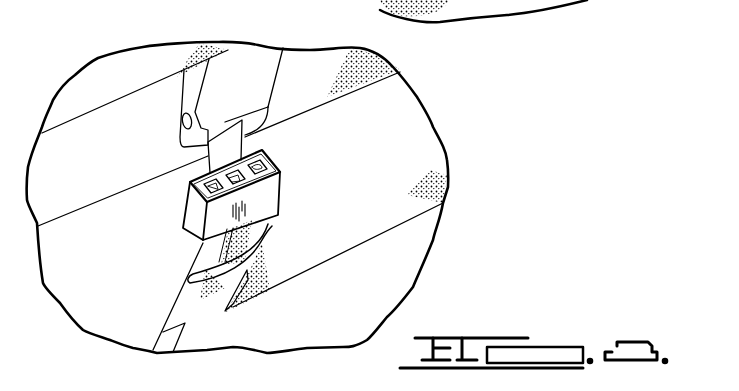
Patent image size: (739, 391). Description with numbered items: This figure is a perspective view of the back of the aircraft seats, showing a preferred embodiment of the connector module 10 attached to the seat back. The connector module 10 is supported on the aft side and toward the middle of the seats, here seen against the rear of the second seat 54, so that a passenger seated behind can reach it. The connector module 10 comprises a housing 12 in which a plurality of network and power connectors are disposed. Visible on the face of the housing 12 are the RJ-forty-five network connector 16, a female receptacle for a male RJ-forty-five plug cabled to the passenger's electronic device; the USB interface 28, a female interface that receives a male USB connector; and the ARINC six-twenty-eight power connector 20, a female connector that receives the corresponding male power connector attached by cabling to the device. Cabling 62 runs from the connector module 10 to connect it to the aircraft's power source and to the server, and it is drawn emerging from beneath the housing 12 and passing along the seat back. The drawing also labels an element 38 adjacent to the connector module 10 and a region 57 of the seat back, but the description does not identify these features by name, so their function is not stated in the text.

The connector module 10 is at (239, 195).
The housing 12 is at (275, 217).
The RJ-45 network connector 16 is at (272, 134).
The ARINC 628 power connector 20 is at (190, 196).
The USB interface 28 is at (278, 181).
The mounting bracket 38 is at (257, 78).
The second seat 54 is at (102, 77).
The garment panel 57 is at (297, 61).
The cabling 62 is at (256, 246).